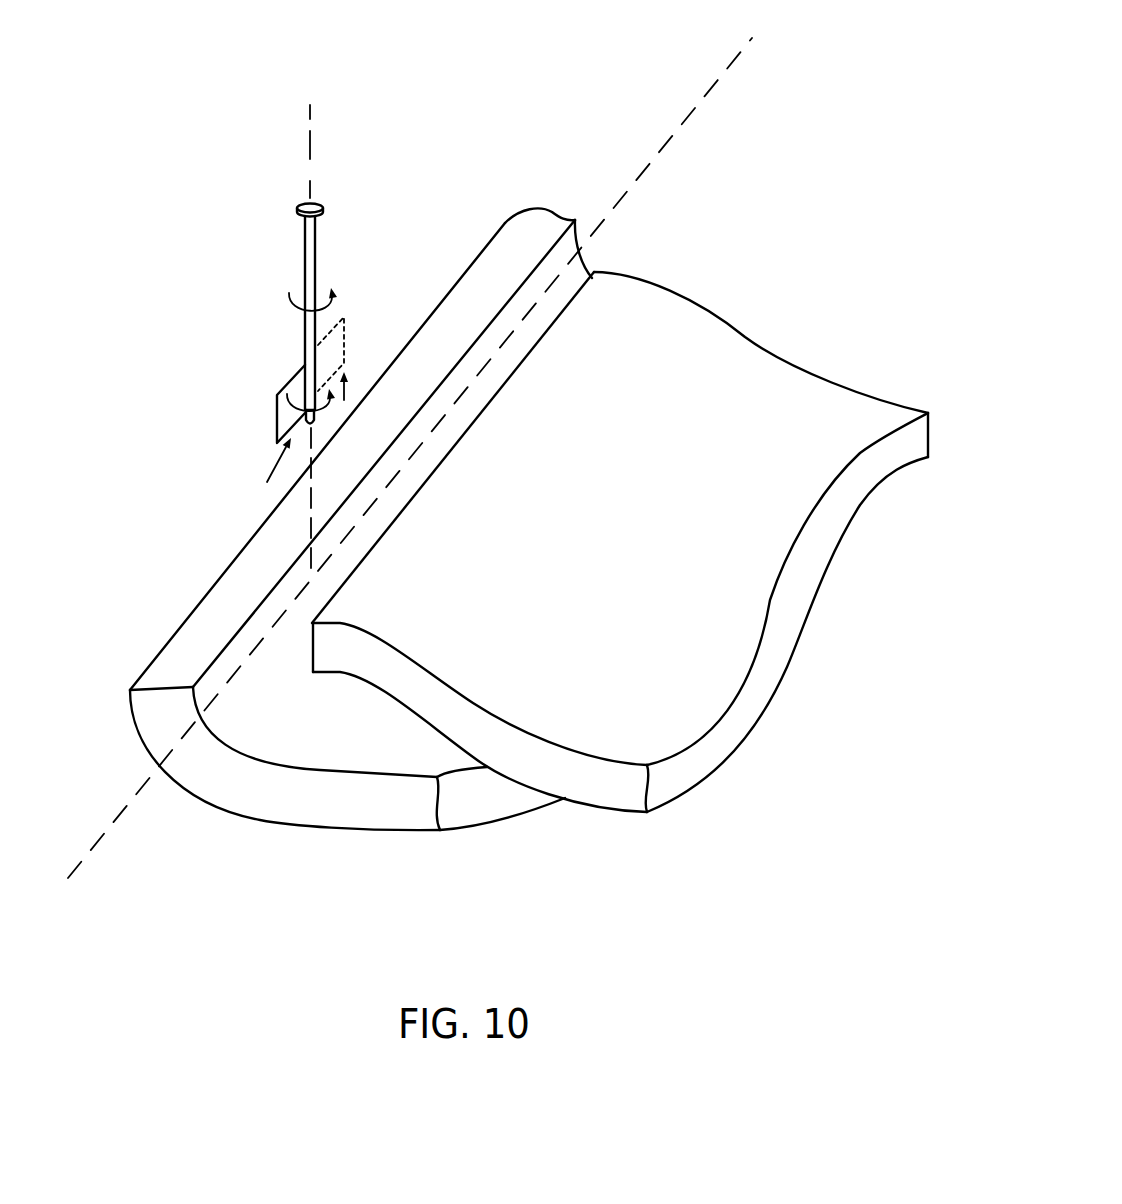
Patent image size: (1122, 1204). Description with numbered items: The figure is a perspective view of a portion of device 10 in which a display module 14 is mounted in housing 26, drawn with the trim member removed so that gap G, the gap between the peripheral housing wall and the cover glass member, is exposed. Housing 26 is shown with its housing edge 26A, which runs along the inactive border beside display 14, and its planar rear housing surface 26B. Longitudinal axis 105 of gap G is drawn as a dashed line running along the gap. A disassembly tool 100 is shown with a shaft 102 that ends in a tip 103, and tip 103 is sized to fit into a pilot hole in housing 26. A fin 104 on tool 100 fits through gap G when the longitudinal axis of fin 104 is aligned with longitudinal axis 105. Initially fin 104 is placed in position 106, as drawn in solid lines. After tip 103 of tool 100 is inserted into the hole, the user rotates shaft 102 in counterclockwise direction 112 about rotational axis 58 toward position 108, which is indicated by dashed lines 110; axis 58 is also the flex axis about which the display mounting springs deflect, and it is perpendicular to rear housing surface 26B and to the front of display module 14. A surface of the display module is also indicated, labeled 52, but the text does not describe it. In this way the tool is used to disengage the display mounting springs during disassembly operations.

The device 10 is at (873, 153).
The display module 14 is at (627, 520).
The housing 26 is at (340, 556).
The housing edge 26A is at (187, 637).
The rear housing surface 26B is at (173, 847).
The surface of first component 52 is at (620, 518).
The flex axis 58 is at (306, 135).
The disassembly tool 100 is at (291, 369).
The shaft 102 is at (308, 257).
The tip 103 is at (311, 430).
The fin 104 is at (285, 393).
The longitudinal axis 105 is at (718, 70).
The position 106 is at (255, 468).
The position 108 is at (368, 367).
The dashed lines 110 is at (348, 333).
The counterclockwise direction 112 is at (298, 306).
The gap G is at (577, 213).